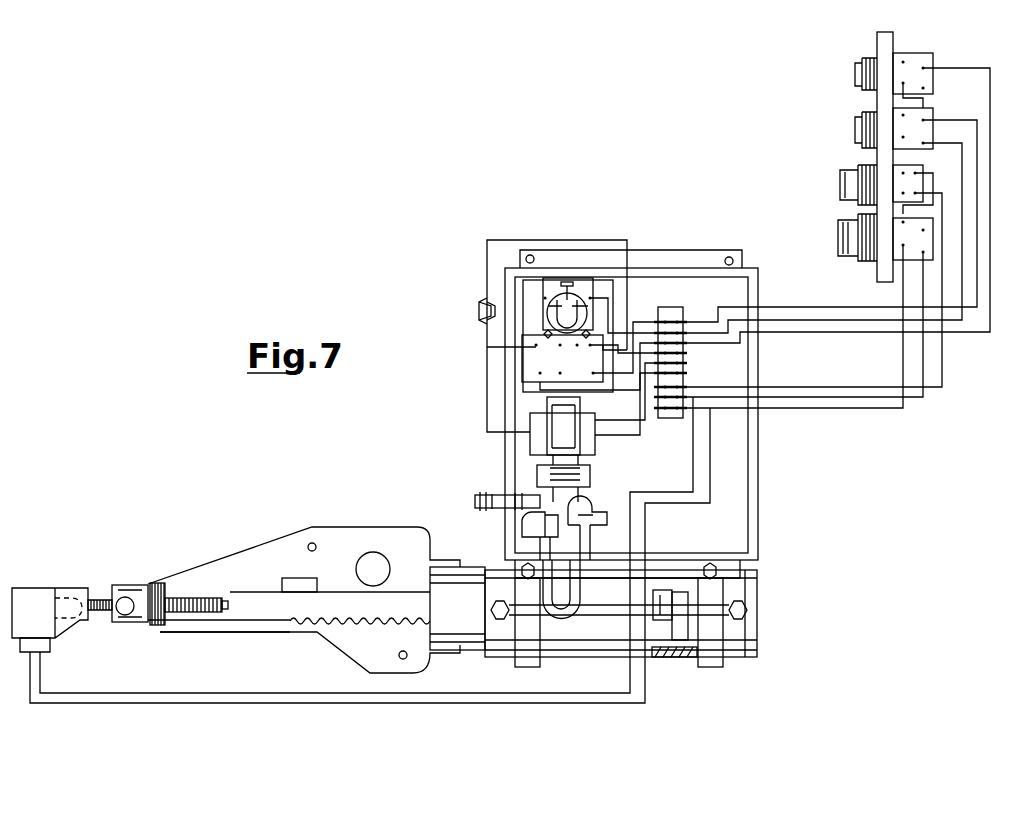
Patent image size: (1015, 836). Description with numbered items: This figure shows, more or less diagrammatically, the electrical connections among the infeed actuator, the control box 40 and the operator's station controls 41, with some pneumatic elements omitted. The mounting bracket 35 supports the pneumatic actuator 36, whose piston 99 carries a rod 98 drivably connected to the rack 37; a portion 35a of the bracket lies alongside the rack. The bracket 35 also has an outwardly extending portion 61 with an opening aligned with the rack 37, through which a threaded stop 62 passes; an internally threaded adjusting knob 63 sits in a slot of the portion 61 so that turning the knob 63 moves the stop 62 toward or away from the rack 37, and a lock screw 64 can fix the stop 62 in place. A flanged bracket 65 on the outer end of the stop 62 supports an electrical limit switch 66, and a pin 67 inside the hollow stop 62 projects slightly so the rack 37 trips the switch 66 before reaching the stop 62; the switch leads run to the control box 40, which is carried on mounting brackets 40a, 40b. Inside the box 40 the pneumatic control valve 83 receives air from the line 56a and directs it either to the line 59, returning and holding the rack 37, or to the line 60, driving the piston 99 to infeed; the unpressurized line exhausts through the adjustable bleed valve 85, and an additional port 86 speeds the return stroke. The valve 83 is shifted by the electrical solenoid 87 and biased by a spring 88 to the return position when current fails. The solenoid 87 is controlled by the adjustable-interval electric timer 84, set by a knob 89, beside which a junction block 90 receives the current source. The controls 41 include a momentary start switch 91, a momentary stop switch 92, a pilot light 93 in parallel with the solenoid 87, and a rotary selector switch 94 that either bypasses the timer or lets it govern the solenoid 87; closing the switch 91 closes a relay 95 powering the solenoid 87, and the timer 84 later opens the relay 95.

The mounting bracket 35 is at (270, 534).
The arm stop 35a is at (298, 580).
The pneumatic actuator 36 is at (640, 650).
The rack 37 is at (346, 604).
The control box 40 is at (758, 510).
The mounting bracket 40a is at (530, 662).
The mounting bracket 40b is at (712, 668).
The operator's station controls 41 is at (900, 46).
The line 56a is at (614, 648).
The line 59 is at (504, 616).
The line 60 is at (745, 620).
The outwardly extending portion 61 is at (128, 585).
The threaded stop 62 is at (211, 600).
The adjusting knob 63 is at (162, 583).
The lock screw 64 is at (125, 614).
The flanged bracket 65 is at (62, 630).
The electrical limit switch 66 is at (36, 598).
The pin 67 is at (230, 605).
The pneumatic control valve 83 is at (593, 507).
The adjustable-interval electric timer 84 is at (617, 299).
The adjustable valve 85 is at (476, 497).
The additional port 86 is at (525, 518).
The electrical solenoid 87 is at (530, 437).
The spring 88 is at (540, 482).
The knob 89 is at (485, 315).
The junction block 90 is at (680, 312).
The momentary switch 91 is at (858, 127).
The momentary switch 92 is at (857, 78).
The pilot light 93 is at (846, 180).
The rotary manual selector switch 94 is at (848, 243).
The relay 95 is at (567, 298).
The rod 98 is at (665, 606).
The piston 99 is at (684, 600).